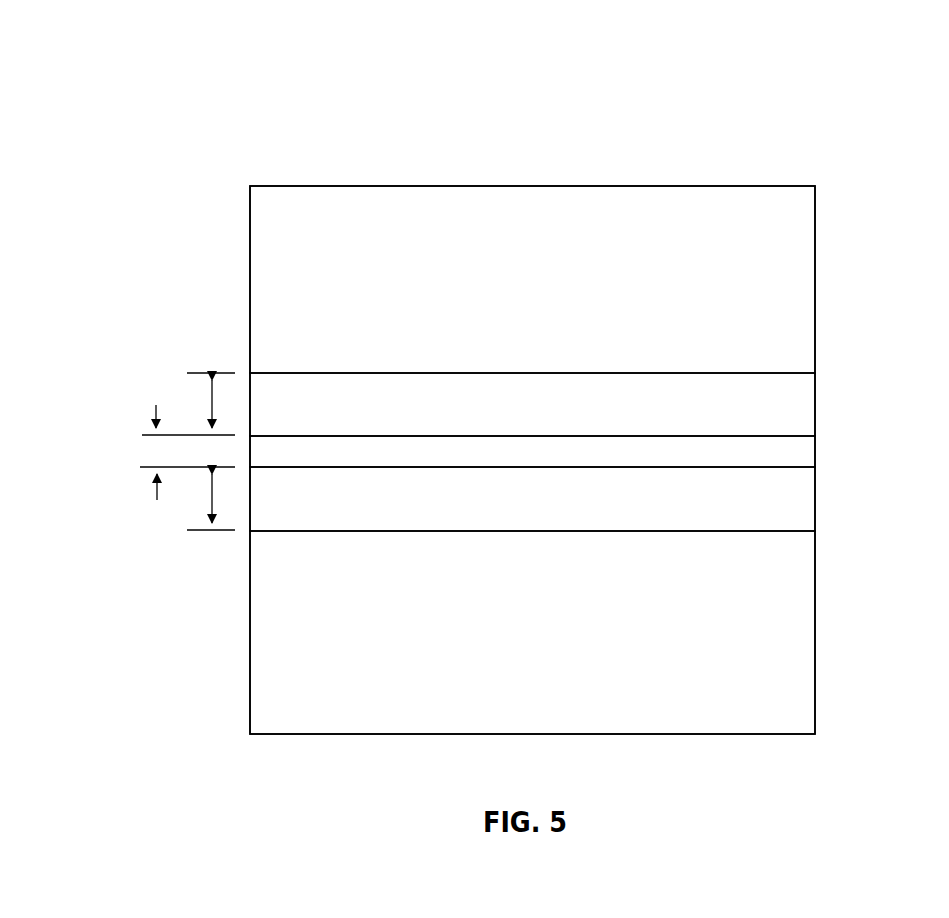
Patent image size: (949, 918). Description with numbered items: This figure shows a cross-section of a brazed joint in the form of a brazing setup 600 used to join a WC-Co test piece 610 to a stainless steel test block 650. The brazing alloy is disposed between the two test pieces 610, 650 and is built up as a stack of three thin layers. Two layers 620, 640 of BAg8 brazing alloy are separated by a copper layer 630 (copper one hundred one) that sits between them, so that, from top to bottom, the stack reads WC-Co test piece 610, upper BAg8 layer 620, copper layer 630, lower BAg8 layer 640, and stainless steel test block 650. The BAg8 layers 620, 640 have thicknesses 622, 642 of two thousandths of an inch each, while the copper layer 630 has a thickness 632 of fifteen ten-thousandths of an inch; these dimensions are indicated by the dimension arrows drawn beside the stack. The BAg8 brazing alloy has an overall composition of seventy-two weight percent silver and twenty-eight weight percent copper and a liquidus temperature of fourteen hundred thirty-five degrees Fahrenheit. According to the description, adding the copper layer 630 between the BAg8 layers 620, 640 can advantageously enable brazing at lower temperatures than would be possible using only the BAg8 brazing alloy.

The brazing setup 600 is at (800, 140).
The test piece 610 is at (815, 278).
The BAg8 layer 620 is at (815, 405).
The Cu 101 layer 630 is at (815, 450).
The BAg8 layer 640 is at (815, 499).
The test piece 650 is at (815, 629).
The thickness 622 is at (212, 405).
The thickness 632 is at (157, 500).
The thickness 642 is at (212, 500).